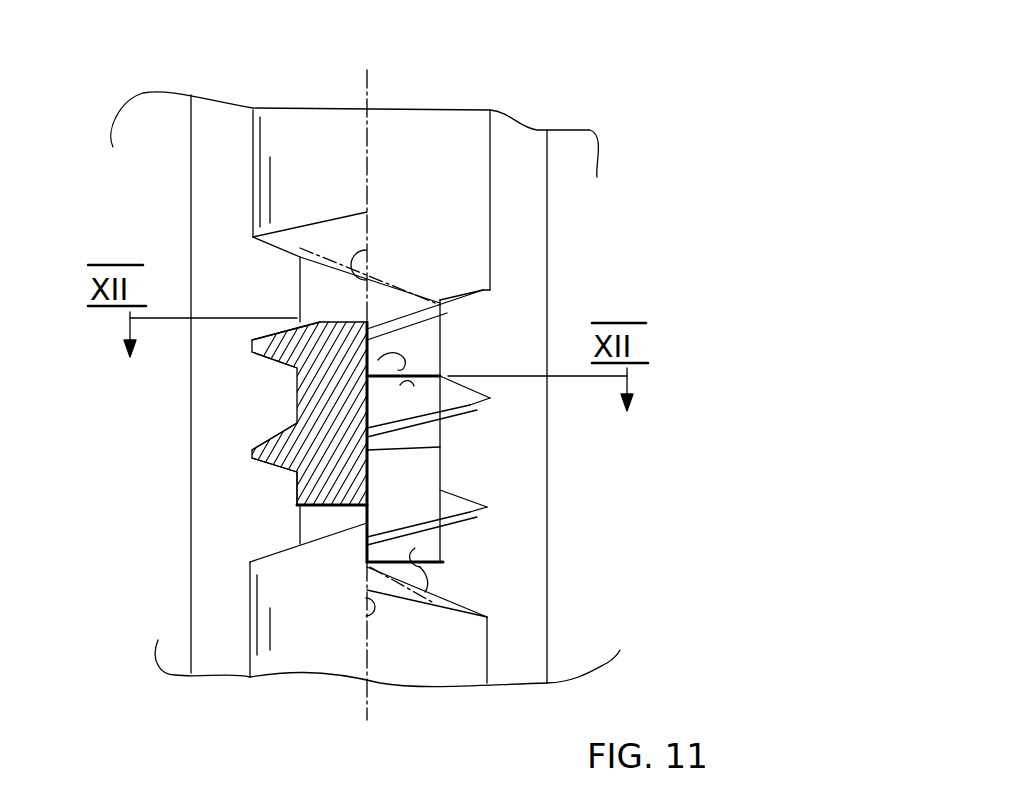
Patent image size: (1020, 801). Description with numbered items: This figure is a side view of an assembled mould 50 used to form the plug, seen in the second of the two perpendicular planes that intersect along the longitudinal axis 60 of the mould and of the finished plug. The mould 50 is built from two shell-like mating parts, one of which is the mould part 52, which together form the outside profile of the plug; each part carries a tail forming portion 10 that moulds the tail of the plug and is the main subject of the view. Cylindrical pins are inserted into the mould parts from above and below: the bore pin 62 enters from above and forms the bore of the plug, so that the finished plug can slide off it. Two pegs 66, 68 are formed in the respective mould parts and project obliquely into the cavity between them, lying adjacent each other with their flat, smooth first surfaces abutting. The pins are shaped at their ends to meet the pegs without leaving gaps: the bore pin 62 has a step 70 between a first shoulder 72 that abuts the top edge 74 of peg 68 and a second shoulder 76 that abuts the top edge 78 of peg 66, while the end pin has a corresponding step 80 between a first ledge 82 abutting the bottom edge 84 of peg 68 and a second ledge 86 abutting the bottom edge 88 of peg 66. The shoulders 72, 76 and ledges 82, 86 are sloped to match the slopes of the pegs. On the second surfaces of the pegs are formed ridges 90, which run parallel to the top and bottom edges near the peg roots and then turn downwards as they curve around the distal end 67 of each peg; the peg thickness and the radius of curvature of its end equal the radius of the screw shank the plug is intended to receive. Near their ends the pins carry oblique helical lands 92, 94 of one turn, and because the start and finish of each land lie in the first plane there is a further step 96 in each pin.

The tail forming portion 10 is at (572, 564).
The mould 50 is at (643, 90).
The mating part 52 is at (166, 443).
The longitudinal axis 60 is at (372, 95).
The bore pin 62 is at (450, 130).
The peg 66 is at (443, 447).
The distal end 67 is at (405, 431).
The peg 68 is at (292, 387).
The step 70 is at (483, 308).
The first shoulder 72 is at (302, 324).
The top edge 74 is at (335, 315).
The second shoulder 76 is at (443, 358).
The top edge 78 is at (403, 357).
The step 80 is at (365, 515).
The first ledge 82 is at (292, 490).
The bottom edge 84 is at (297, 507).
The second ledge 86 is at (410, 563).
The bottom edge 88 is at (422, 562).
The ridges 90 is at (473, 407).
The oblique helical land 92 is at (320, 235).
The oblique helical land 94 is at (362, 505).
The further step 96 is at (367, 243).